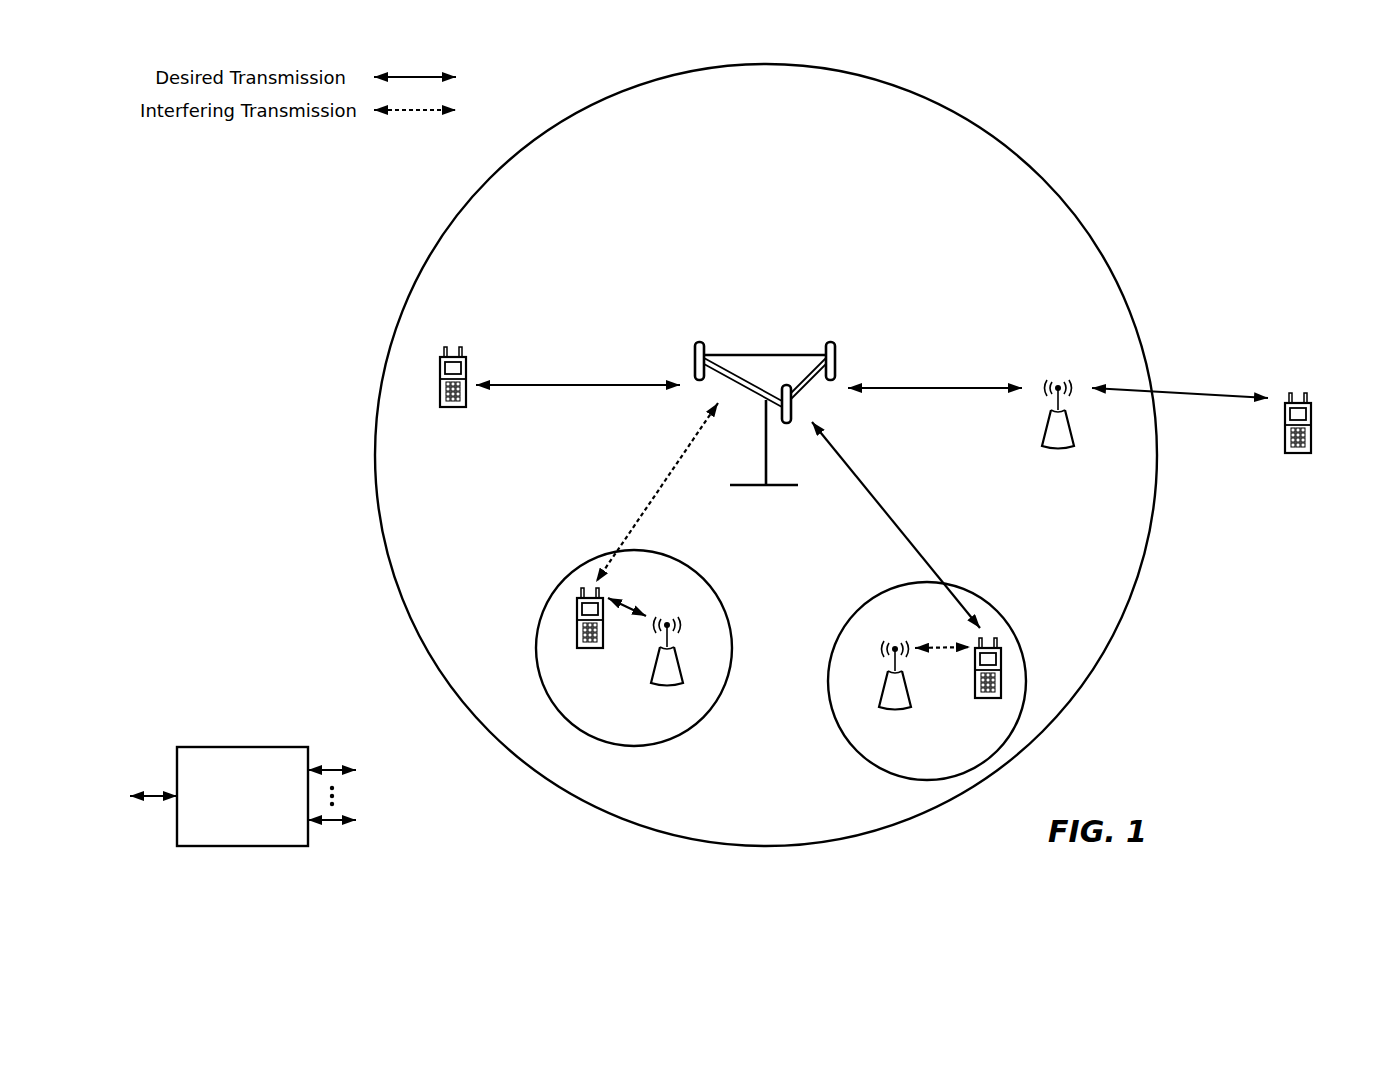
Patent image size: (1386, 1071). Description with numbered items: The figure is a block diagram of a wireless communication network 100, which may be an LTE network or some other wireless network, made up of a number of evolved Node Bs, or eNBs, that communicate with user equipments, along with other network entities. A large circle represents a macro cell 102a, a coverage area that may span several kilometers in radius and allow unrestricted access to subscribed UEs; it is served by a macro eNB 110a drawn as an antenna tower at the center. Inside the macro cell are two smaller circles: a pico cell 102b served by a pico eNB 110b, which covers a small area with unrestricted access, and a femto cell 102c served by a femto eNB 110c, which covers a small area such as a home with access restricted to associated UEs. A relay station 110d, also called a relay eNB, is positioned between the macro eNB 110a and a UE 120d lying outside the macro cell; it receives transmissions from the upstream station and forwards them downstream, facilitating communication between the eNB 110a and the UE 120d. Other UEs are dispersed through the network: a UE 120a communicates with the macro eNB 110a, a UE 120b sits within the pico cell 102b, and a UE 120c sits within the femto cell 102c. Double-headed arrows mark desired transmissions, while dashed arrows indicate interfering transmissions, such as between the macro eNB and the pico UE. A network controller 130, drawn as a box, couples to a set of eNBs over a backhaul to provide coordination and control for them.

The wireless communication network 100 is at (1231, 123).
The macro cell 102a is at (1023, 159).
The pico cell 102b is at (720, 572).
The femto cell 102c is at (845, 619).
The macro eNB 110a is at (759, 355).
The pico eNB 110b is at (693, 667).
The femto eNB 110c is at (882, 701).
The relay station 110d is at (1059, 386).
The UE 120a is at (439, 364).
The UE 120b is at (577, 640).
The UE 120c is at (975, 690).
The UE 120d is at (1313, 412).
The network controller 130 is at (236, 747).